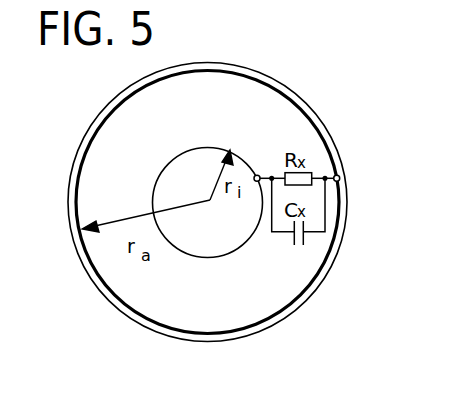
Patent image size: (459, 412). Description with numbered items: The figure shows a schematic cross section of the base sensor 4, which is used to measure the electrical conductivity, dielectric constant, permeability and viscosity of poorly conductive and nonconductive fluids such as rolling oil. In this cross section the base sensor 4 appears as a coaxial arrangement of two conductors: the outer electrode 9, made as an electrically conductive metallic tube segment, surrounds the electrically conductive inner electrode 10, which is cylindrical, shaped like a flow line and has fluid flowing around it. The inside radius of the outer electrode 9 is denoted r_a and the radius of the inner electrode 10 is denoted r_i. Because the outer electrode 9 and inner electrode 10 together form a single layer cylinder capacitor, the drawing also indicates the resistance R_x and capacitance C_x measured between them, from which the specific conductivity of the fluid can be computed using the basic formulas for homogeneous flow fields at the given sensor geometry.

The base sensor 4 is at (301, 86).
The outer electrode 9 is at (320, 115).
The inner electrode 10 is at (220, 237).